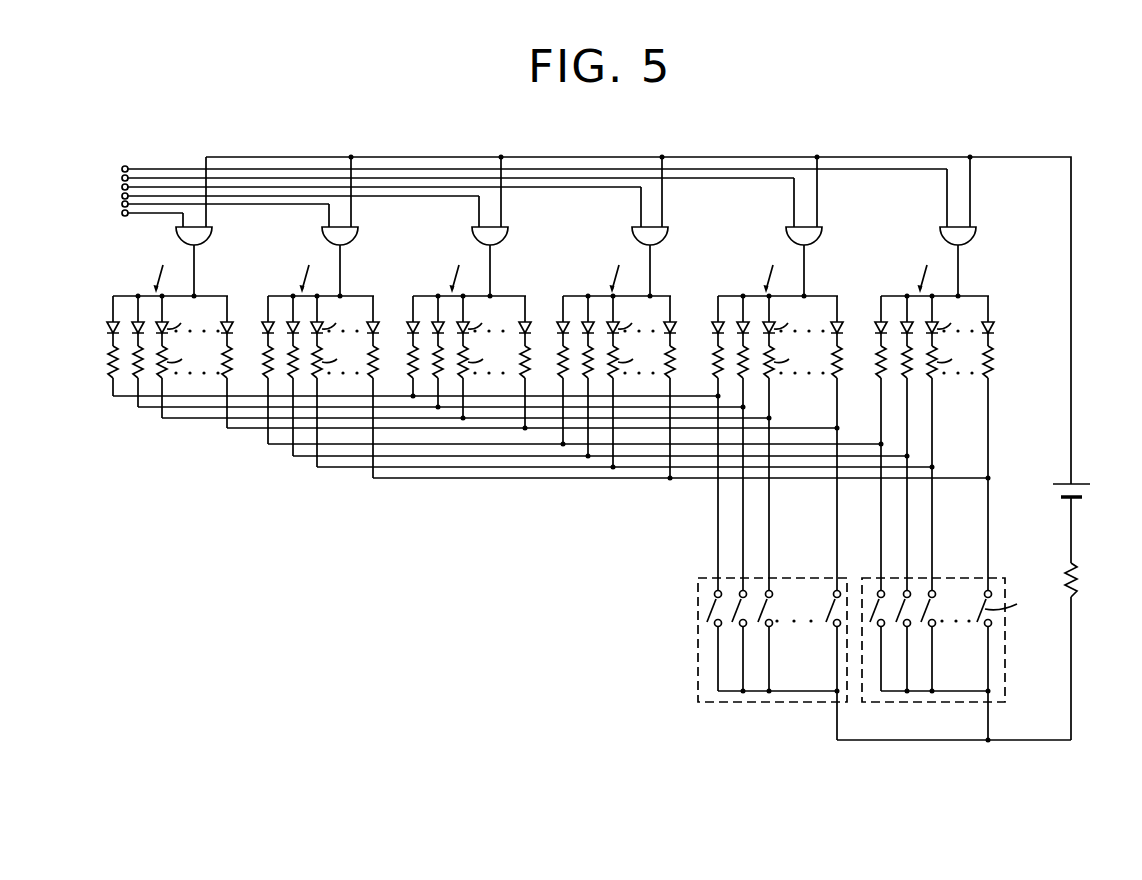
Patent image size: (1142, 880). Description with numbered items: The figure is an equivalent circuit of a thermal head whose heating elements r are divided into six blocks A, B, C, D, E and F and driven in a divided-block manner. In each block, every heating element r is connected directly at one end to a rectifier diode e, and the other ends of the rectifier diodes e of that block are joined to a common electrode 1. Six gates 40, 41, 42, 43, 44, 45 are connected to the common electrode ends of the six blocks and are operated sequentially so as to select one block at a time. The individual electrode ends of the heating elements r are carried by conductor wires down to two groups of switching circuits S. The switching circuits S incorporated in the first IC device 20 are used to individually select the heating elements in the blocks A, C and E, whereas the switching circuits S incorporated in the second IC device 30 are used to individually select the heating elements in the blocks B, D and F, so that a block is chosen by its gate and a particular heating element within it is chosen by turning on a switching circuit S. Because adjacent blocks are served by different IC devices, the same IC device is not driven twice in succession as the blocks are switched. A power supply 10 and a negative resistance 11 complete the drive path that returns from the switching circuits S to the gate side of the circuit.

The common electrode 1 is at (536, 492).
The power supply 10 is at (1090, 493).
The negative resistance 11 is at (1077, 579).
The first IC device 20 is at (747, 640).
The second IC device 30 is at (1005, 656).
The gate 40 is at (212, 236).
The gate 41 is at (358, 236).
The gate 42 is at (508, 236).
The gate 43 is at (668, 236).
The gate 44 is at (822, 236).
The gate 45 is at (976, 236).
The rectifier diode e is at (108, 328).
The heating element r is at (108, 362).
The switching circuit S is at (768, 610).